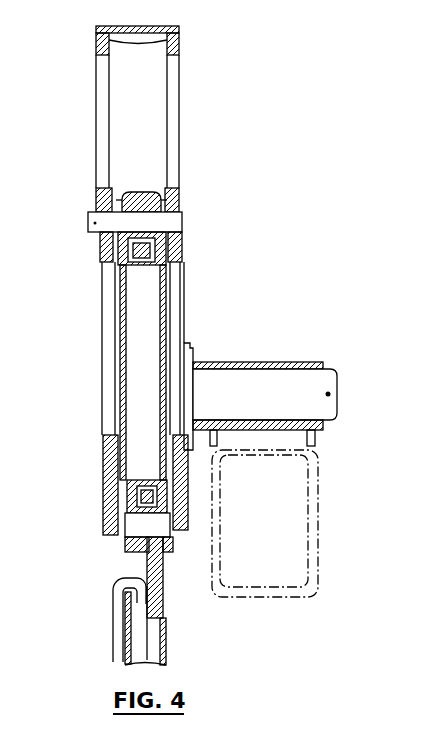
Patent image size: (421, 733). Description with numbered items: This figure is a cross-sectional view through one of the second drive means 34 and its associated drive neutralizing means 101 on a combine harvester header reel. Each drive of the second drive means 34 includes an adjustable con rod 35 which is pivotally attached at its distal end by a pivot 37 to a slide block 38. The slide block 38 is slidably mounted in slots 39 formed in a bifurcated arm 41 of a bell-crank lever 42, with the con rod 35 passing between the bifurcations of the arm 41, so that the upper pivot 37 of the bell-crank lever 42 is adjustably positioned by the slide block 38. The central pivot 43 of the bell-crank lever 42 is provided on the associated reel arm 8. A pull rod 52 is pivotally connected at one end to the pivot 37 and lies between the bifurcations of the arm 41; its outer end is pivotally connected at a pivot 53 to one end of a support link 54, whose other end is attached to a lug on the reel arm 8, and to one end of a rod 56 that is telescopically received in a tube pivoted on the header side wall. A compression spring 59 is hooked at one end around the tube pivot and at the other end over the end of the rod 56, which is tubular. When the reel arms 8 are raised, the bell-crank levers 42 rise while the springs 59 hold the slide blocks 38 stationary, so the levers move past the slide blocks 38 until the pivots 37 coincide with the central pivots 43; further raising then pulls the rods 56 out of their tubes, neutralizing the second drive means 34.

The drive neutralizing means 101 is at (312, 299).
The bell-crank lever 42 is at (88, 79).
The slots 39 is at (97, 120).
The bifurcated arm 41 is at (167, 37).
The second drive means 34 is at (213, 190).
The adjustable con rod 35 is at (138, 191).
The pivot 37 is at (182, 226).
The slide block 38 is at (180, 200).
The pull rod 52 is at (123, 303).
The central pivot 43 is at (337, 385).
The reel arm 8 is at (318, 493).
The pivot 53 is at (125, 540).
The support link 54 is at (140, 557).
The rod 56 is at (166, 643).
The compression spring 59 is at (113, 620).